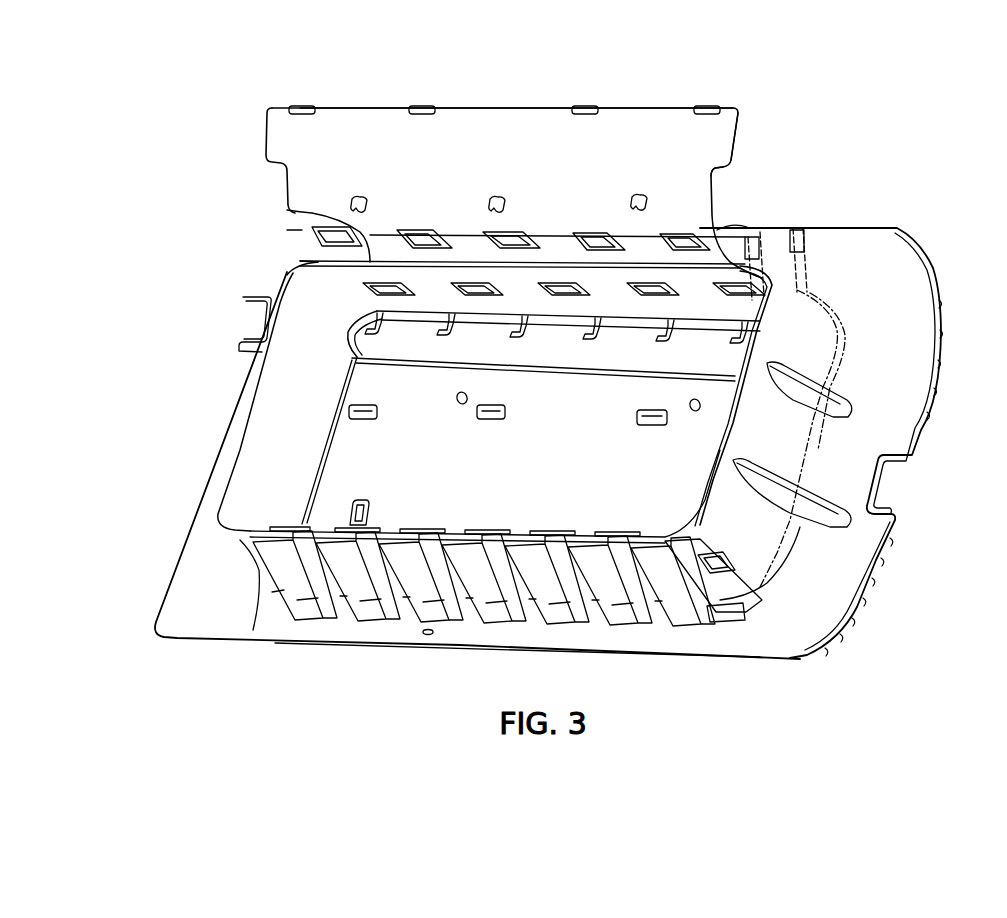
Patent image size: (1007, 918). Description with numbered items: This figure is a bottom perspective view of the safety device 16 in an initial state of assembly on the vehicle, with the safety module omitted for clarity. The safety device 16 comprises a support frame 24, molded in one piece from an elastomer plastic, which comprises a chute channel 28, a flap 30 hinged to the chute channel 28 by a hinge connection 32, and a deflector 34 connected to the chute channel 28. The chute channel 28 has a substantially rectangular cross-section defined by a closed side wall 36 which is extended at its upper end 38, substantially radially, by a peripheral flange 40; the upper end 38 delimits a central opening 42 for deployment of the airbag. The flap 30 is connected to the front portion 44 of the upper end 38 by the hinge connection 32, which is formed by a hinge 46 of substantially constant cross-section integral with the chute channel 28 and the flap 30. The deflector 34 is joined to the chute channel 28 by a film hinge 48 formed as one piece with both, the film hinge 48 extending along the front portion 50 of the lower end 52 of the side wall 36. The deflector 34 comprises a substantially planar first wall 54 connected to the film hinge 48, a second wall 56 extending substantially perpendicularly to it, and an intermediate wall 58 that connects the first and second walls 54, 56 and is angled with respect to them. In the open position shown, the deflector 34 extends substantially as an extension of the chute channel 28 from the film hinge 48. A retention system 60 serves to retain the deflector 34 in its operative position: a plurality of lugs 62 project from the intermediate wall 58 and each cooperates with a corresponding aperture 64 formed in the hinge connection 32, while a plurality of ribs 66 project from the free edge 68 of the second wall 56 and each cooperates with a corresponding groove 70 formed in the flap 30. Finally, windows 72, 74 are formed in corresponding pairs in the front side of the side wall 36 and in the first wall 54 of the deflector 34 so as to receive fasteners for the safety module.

The safety device 16 is at (112, 114).
The support frame 24 is at (157, 232).
The chute channel 28 is at (220, 590).
The flap 30 is at (733, 423).
The hinge connection 32 is at (810, 297).
The deflector 34 is at (270, 100).
The side wall 36 is at (253, 453).
The upper end 38 is at (763, 583).
The peripheral flange 40 is at (833, 603).
The central opening 42 is at (300, 491).
The front portion 44 is at (323, 308).
The hinge 46 is at (747, 357).
The film hinge 48 is at (317, 258).
The front portion 50 is at (300, 212).
The lower end 52 is at (240, 357).
The first wall 54 is at (723, 247).
The second wall 56 is at (713, 138).
The intermediate wall 58 is at (693, 177).
The retention system 60 is at (420, 80).
The lugs 62 is at (487, 203).
The aperture 64 is at (587, 333).
The ribs 66 is at (418, 105).
The free edge 68 is at (456, 107).
The groove 70 is at (484, 404).
The windows 72 is at (758, 333).
The windows 74 is at (685, 240).